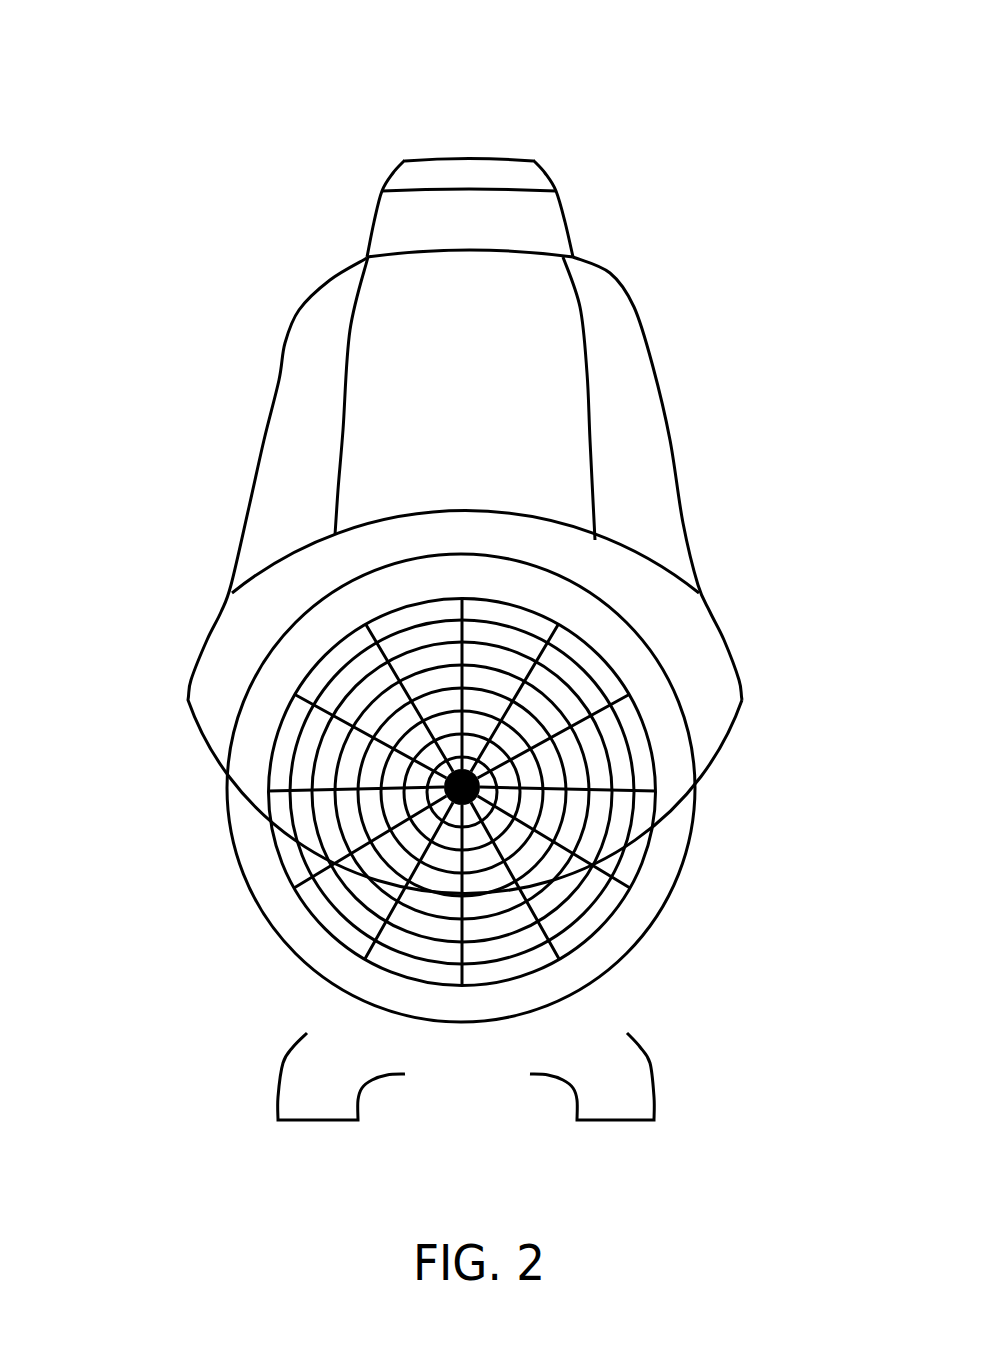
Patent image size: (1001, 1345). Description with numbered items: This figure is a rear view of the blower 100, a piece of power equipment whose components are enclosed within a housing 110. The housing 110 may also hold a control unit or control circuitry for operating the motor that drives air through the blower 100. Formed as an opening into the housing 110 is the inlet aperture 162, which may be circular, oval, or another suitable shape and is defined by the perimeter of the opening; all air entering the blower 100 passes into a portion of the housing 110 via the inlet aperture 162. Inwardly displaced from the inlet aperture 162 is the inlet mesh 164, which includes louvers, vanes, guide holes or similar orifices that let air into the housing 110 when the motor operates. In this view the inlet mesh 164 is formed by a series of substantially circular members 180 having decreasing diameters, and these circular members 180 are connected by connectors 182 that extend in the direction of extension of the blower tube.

The blower 100 is at (133, 112).
The housing 110 is at (627, 342).
The inlet aperture 162 is at (697, 820).
The inlet mesh 164 is at (471, 756).
The circular members 180 is at (647, 727).
The connectors 182 is at (615, 697).